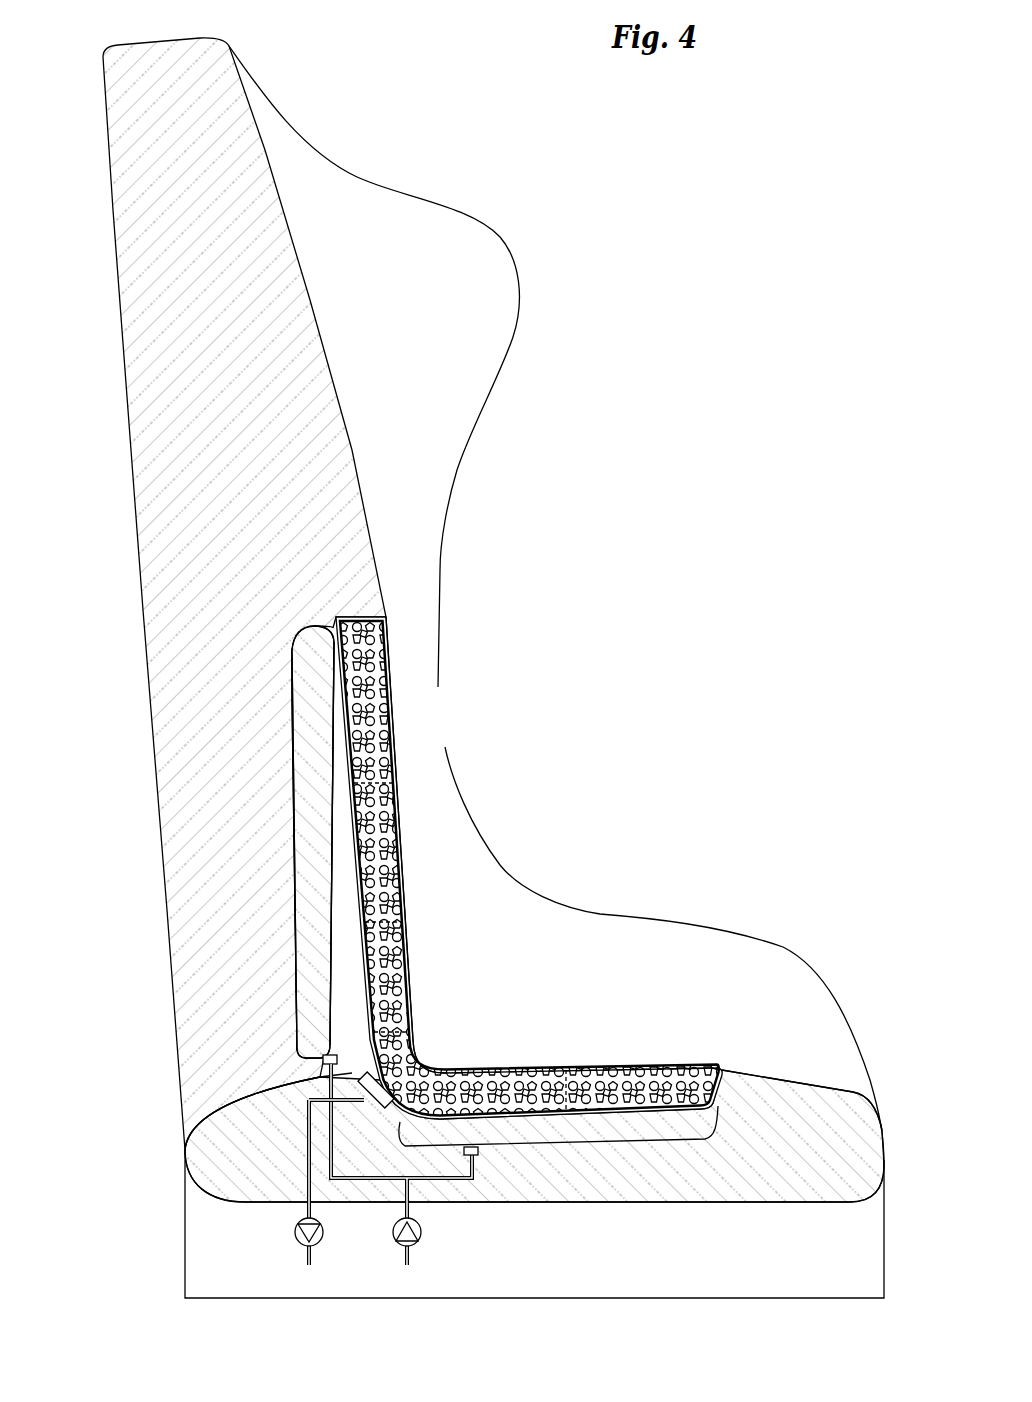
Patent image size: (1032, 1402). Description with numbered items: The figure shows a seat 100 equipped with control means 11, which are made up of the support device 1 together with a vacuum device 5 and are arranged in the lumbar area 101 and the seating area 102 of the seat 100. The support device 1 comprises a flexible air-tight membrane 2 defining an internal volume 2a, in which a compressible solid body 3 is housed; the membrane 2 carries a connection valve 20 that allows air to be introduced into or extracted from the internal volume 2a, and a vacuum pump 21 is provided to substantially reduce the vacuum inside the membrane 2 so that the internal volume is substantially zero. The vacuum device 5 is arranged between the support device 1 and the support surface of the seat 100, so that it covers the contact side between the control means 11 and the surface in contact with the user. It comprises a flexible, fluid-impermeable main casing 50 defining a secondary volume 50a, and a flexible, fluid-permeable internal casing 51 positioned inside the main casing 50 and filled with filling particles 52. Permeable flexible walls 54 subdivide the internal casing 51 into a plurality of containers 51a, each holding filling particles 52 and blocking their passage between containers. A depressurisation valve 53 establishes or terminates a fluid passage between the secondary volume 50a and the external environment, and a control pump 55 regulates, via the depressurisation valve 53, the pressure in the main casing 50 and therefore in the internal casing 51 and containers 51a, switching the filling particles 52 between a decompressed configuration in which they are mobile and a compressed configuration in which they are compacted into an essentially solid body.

The seat 100 is at (481, 668).
The support device 1 is at (278, 884).
The flexible air-tight membrane 2 is at (720, 1132).
The internal volume 2a is at (293, 935).
The compressible solid body 3 is at (580, 1136).
The vacuum device 5 is at (529, 796).
The control means 11 is at (506, 805).
The connection valve 20 is at (478, 1153).
The vacuum pump 21 is at (325, 1062).
The main casing 50 is at (199, 842).
The secondary volume 50a is at (332, 738).
The internal casing 51 is at (393, 650).
The containers 51a is at (418, 830).
The filling particles 52 is at (652, 1057).
The depressurisation valve 53 is at (378, 1103).
The walls 54 is at (443, 1073).
The control pump 55 is at (295, 1238).
The lumbar area 101 is at (416, 792).
The seating area 102 is at (657, 1212).